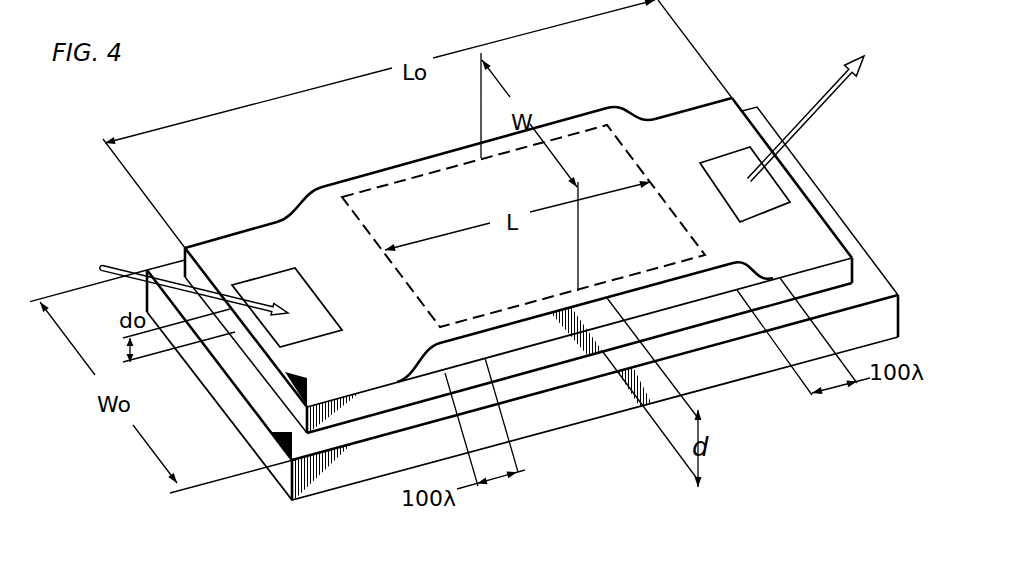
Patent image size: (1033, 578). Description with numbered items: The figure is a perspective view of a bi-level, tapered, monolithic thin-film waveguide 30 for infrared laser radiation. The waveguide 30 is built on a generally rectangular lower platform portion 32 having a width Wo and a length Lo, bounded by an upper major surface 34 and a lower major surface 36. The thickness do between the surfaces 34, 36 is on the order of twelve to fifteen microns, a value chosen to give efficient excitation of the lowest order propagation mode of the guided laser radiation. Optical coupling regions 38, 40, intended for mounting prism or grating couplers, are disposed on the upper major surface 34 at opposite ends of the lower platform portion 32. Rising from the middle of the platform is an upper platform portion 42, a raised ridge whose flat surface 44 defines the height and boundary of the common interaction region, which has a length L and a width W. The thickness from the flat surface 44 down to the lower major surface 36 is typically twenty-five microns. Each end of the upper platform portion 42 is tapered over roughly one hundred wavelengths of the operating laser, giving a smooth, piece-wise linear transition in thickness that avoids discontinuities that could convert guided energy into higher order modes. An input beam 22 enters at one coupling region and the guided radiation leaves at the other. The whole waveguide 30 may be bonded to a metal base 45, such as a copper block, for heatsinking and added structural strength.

The input laser beam 22 is at (116, 270).
The thin-film waveguide 30 is at (768, 83).
The lower platform portion 32 is at (364, 397).
The upper major surface 34 is at (287, 362).
The lower major surface 36 is at (527, 374).
The optical coupling region 38 is at (277, 283).
The optical coupling region 40 is at (777, 195).
The upper platform portion 42 is at (448, 147).
The flat surface 44 is at (583, 138).
The metal base 45 is at (732, 370).